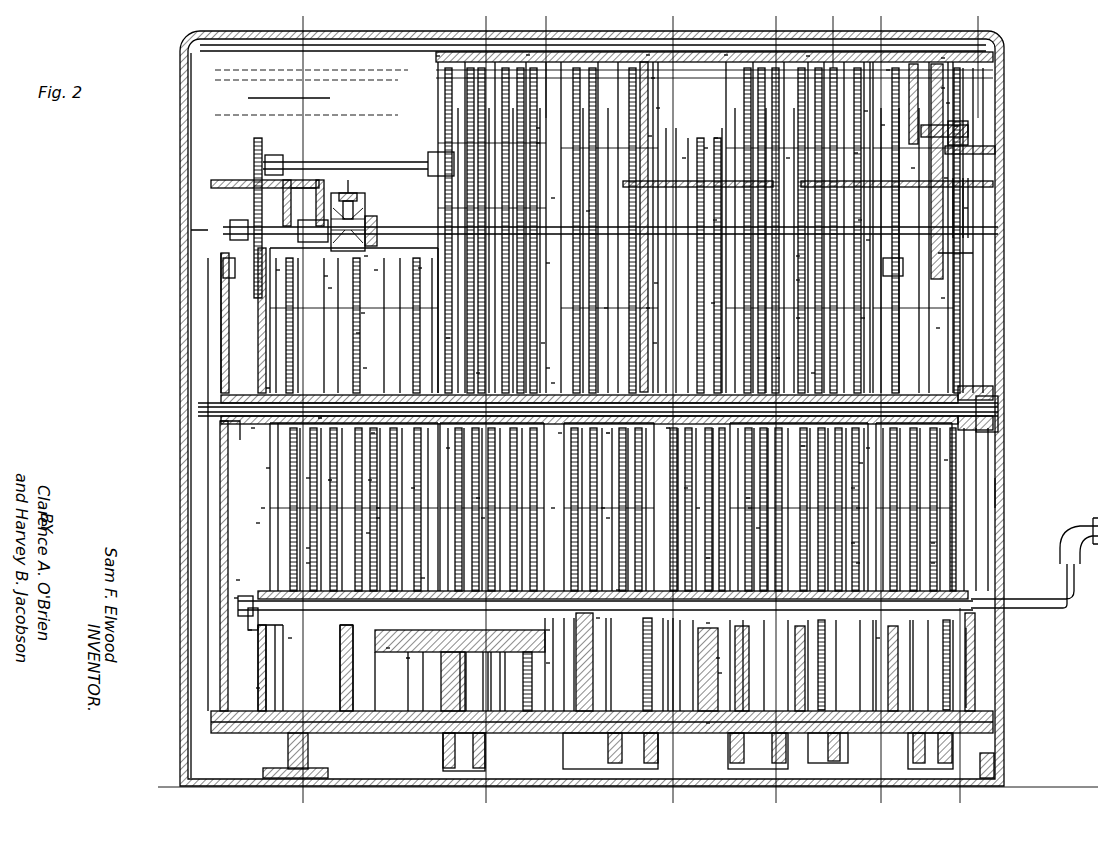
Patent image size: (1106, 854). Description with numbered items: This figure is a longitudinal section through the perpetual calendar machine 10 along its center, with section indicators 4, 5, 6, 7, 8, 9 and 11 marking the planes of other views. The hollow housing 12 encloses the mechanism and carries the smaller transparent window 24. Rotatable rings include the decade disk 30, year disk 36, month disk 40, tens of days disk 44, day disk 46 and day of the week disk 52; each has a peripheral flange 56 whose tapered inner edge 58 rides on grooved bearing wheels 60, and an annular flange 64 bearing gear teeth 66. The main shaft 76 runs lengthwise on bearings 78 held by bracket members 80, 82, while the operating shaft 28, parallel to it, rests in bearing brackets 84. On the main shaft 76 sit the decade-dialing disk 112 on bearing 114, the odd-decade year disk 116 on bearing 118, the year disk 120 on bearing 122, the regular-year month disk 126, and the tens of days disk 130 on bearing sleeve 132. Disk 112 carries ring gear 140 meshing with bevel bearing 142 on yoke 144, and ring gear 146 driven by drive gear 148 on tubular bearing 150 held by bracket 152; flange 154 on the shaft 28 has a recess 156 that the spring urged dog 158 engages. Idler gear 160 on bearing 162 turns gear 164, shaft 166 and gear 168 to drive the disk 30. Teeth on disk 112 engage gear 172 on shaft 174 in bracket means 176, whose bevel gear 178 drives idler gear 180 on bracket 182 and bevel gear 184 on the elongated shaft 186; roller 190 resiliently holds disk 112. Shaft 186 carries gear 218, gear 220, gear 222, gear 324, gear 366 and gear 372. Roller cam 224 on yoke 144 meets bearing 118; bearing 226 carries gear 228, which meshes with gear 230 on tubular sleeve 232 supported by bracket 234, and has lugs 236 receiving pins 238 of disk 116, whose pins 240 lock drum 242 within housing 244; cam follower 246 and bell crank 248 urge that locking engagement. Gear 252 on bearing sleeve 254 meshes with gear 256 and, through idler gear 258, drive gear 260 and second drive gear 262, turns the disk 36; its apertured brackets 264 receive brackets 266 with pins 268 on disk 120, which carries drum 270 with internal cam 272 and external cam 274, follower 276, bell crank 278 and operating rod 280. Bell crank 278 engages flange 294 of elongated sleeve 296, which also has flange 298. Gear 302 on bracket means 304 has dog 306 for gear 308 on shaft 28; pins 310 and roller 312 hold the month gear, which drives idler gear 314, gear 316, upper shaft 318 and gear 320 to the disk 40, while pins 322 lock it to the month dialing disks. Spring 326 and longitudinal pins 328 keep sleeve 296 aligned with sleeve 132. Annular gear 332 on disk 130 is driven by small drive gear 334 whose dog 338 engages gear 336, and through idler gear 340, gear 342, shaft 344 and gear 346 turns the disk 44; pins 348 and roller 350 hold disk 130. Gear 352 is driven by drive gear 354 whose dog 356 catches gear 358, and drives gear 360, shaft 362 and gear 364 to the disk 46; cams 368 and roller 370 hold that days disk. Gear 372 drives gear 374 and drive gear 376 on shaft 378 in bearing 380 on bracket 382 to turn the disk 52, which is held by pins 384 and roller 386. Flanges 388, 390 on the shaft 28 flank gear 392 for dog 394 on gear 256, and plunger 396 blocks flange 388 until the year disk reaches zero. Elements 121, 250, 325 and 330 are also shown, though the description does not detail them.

The section line 4- 4 is at (240, 90).
The section line 5- 5 is at (320, 8).
The section line 6- 6 is at (502, 12).
The section line 7- 7 is at (506, 12).
The section line 8- 8 is at (578, 199).
The section line 9- 9 is at (722, 12).
The section line 10- 10 is at (702, 8).
The section line 11- 11 is at (802, 12).
The housing 12 is at (175, 232).
The shaft 24 is at (740, 490).
The conduit 28 is at (1015, 592).
The upper housing wall 30 is at (428, 50).
The drum 36 is at (520, 47).
The drum 40 is at (640, 47).
The drum 44 is at (718, 47).
The drum 46 is at (800, 48).
The drum 52 is at (935, 50).
The drum 56 is at (880, 62).
The drum hub 58 is at (875, 117).
The drum hub 60 is at (905, 160).
The cylinder 64 is at (645, 70).
The cylinder wall 66 is at (650, 100).
The main shaft 76 is at (993, 400).
The bearing 78 is at (990, 420).
The housing wall 80 is at (995, 480).
The partition wall 82 is at (205, 460).
The support wall 84 is at (960, 640).
The wall 112 is at (260, 460).
The wall 114 is at (245, 420).
The plate 116 is at (370, 500).
The plate 118 is at (365, 425).
The plate 120 is at (545, 500).
The plate 121 is at (595, 500).
The plate 122 is at (552, 425).
The plate 126 is at (750, 520).
The plate 130 is at (850, 500).
The plate 132 is at (860, 440).
The gear 140 is at (270, 262).
The gear 142 is at (318, 268).
The gear 144 is at (322, 280).
The wall 146 is at (255, 500).
The wall 148 is at (250, 515).
The hub 150 is at (282, 630).
The flange 152 is at (250, 680).
The bearing 154 is at (242, 622).
The shaft end 156 is at (228, 590).
The nut 158 is at (230, 572).
The plate 160 is at (250, 200).
The wall 162 is at (250, 300).
The rack 164 is at (247, 132).
The shaft 166 is at (320, 155).
The bearing 168 is at (428, 144).
The plate 172 is at (250, 213).
The bracket 174 is at (285, 222).
The bearing 176 is at (278, 150).
The gear 178 is at (358, 248).
The bevel gear 180 is at (342, 192).
The shaft 182 is at (341, 182).
The bevel gear 184 is at (368, 212).
The shaft 186 is at (395, 222).
The pawl 190 is at (300, 470).
The gear 218 is at (368, 262).
The lever 220 is at (540, 255).
The gear 222 is at (852, 212).
The sleeve 224 is at (260, 380).
The plate 226 is at (357, 360).
The plate 228 is at (355, 305).
The plate 230 is at (360, 525).
The plate 232 is at (322, 472).
The plate 234 is at (380, 645).
The lever 236 is at (362, 472).
The lever 238 is at (370, 510).
The lever 240 is at (405, 480).
The plate 242 is at (415, 570).
The lever 244 is at (412, 260).
The lever 246 is at (350, 325).
The pawl 248 is at (440, 330).
The lever 250 is at (440, 440).
The plate 252 is at (535, 335).
The plate 254 is at (540, 360).
The plate 256 is at (540, 655).
The shaft 258 is at (545, 190).
The gear 260 is at (530, 135).
The gear 262 is at (530, 120).
The lever 264 is at (470, 490).
The lever 266 is at (475, 510).
The lever 268 is at (600, 510).
The lever 270 is at (648, 275).
The lever 272 is at (640, 300).
The shaft 274 is at (631, 586).
The lever 276 is at (598, 300).
The pawl 278 is at (647, 335).
The plate 280 is at (545, 375).
The plate 294 is at (678, 480).
The plate 296 is at (600, 425).
The pawl 298 is at (470, 365).
The plate 302 is at (712, 665).
The wall 304 is at (700, 715).
The spring 306 is at (700, 550).
The plate 308 is at (710, 650).
The lever 310 is at (690, 500).
The lever 312 is at (705, 295).
The gear 314 is at (707, 212).
The gear 316 is at (698, 140).
The shaft 318 is at (676, 150).
The gear 320 is at (642, 128).
The lever 322 is at (742, 500).
The gear 324 is at (790, 248).
The gear 325 is at (790, 272).
The lever 326 is at (805, 365).
The lever 328 is at (795, 438).
The lever 330 is at (770, 350).
The plate 332 is at (845, 480).
The plate 334 is at (845, 535).
The shaft 336 is at (870, 630).
The plate 338 is at (850, 555).
The gear 340 is at (848, 145).
The gear 342 is at (858, 103).
The gear 344 is at (780, 150).
The gear 346 is at (708, 130).
The plate 348 is at (853, 455).
The plate 350 is at (855, 310).
The plate 352 is at (935, 290).
The plate 354 is at (925, 535).
The plate 356 is at (925, 555).
The shaft 358 is at (940, 583).
The block 360 is at (900, 258).
The hub 362 is at (860, 232).
The lever 364 is at (790, 310).
The gear 366 is at (958, 200).
The sleeve 368 is at (938, 452).
The plate 370 is at (930, 320).
The plate 372 is at (938, 170).
The wall 374 is at (940, 95).
The wall 376 is at (935, 80).
The bar 378 is at (960, 120).
The block 380 is at (948, 118).
The block 382 is at (962, 135).
The bar 384 is at (965, 245).
The gear 386 is at (965, 180).
The spring 388 is at (300, 540).
The pin 390 is at (700, 615).
The pin 392 is at (590, 610).
The pin 394 is at (540, 622).
The pin 396 is at (300, 555).